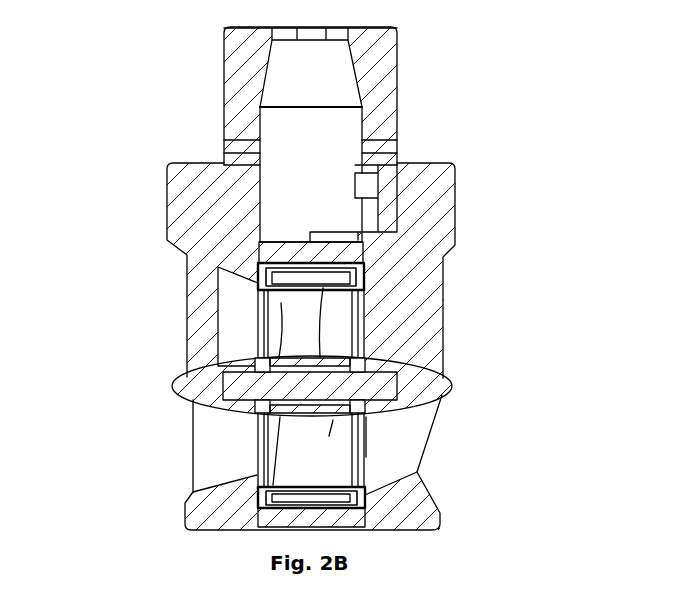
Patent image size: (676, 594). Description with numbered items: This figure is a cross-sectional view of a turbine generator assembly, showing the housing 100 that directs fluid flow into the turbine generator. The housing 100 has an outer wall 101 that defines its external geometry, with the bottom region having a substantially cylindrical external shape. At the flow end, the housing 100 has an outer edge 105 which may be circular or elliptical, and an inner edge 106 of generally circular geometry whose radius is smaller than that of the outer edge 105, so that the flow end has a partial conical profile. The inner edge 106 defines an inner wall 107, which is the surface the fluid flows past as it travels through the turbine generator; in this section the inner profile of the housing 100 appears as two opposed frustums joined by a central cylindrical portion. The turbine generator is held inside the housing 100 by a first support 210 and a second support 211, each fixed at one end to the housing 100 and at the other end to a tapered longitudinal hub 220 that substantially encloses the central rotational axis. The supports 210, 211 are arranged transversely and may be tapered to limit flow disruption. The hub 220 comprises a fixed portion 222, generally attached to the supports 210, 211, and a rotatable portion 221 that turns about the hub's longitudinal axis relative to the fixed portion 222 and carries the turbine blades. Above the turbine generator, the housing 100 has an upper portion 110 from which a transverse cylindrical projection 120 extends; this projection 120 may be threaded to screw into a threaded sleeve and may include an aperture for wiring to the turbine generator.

The housing 100 is at (457, 207).
The outer wall 101 is at (420, 530).
The outer edge 105 is at (183, 516).
The inner edge 106 is at (255, 473).
The inner wall 107 is at (333, 485).
The upper portion 110 is at (167, 168).
The transverse cylindrical projection 120 is at (223, 135).
The first support 210 is at (203, 292).
The second support 211 is at (443, 316).
The tapered longitudinal hub 220 is at (177, 383).
The rotatable portion 221 is at (377, 413).
The fixed portion 222 is at (213, 367).